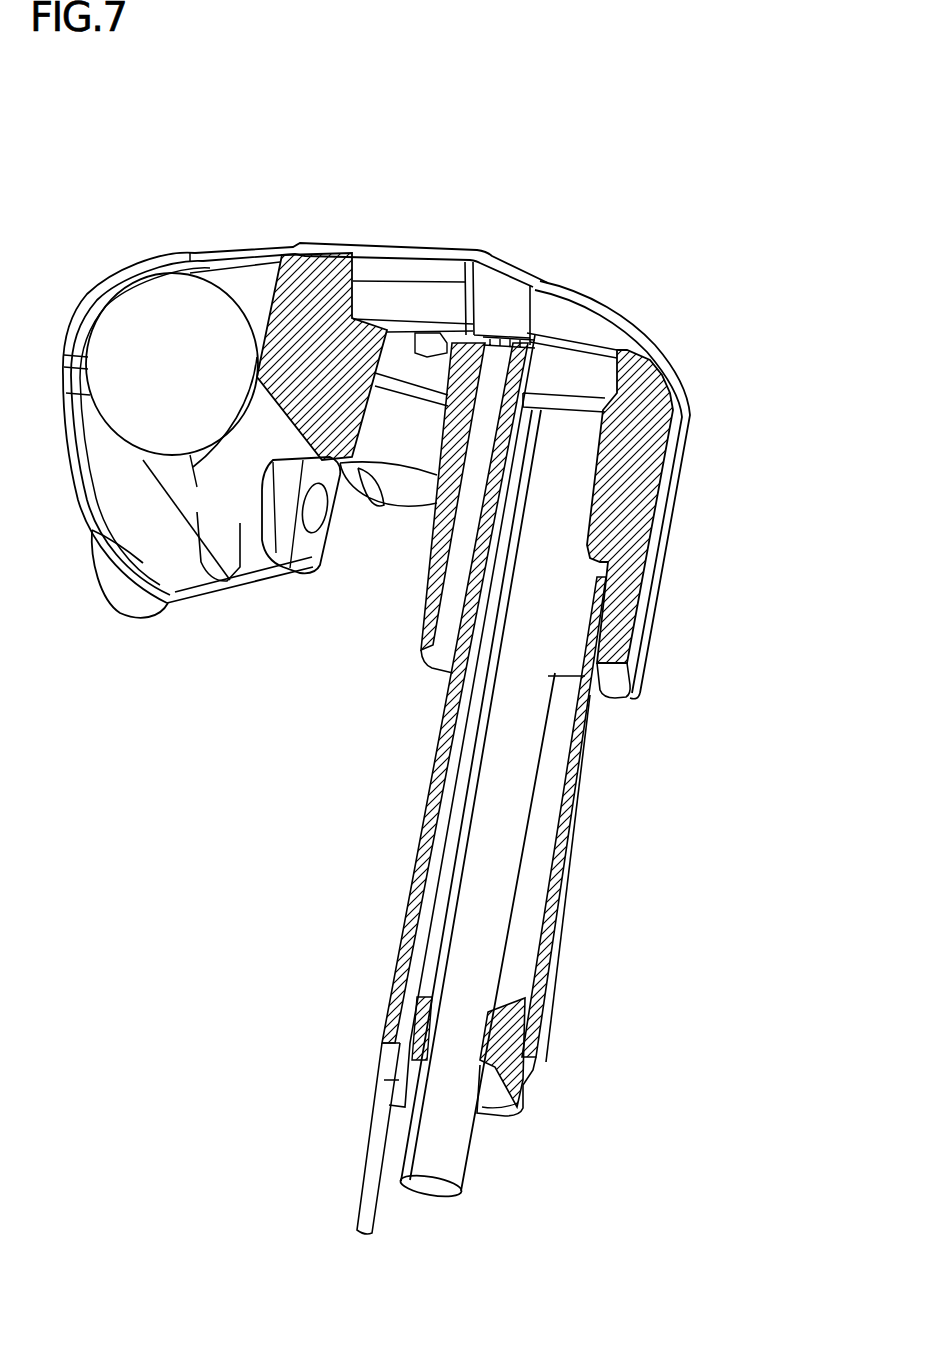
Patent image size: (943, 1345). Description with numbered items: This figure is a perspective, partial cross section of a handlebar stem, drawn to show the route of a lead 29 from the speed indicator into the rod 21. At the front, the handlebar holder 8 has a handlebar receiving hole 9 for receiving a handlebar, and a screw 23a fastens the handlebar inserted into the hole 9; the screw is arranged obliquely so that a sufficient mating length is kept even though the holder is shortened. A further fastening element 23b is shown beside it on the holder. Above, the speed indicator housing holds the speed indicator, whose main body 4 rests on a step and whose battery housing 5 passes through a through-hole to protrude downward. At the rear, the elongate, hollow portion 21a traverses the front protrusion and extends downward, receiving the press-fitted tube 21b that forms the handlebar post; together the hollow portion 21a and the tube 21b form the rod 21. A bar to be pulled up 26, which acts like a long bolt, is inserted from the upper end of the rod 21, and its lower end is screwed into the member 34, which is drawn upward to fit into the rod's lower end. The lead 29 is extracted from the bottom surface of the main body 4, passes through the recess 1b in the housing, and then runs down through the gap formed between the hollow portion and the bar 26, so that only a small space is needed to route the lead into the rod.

The recess 1b is at (497, 333).
The main body 4 is at (409, 270).
The battery housing 5 is at (417, 447).
The handlebar holder 8 is at (367, 620).
The handlebar receiving hole 9 is at (142, 347).
The rod 21 is at (656, 698).
The elongate, hollow portion 21a is at (498, 433).
The tube 21b is at (460, 665).
The screw 23a is at (125, 592).
The mounting lug 23b is at (327, 523).
The bar to be pulled up 26 is at (512, 773).
The lead 29 is at (524, 346).
The member 34 is at (505, 1038).